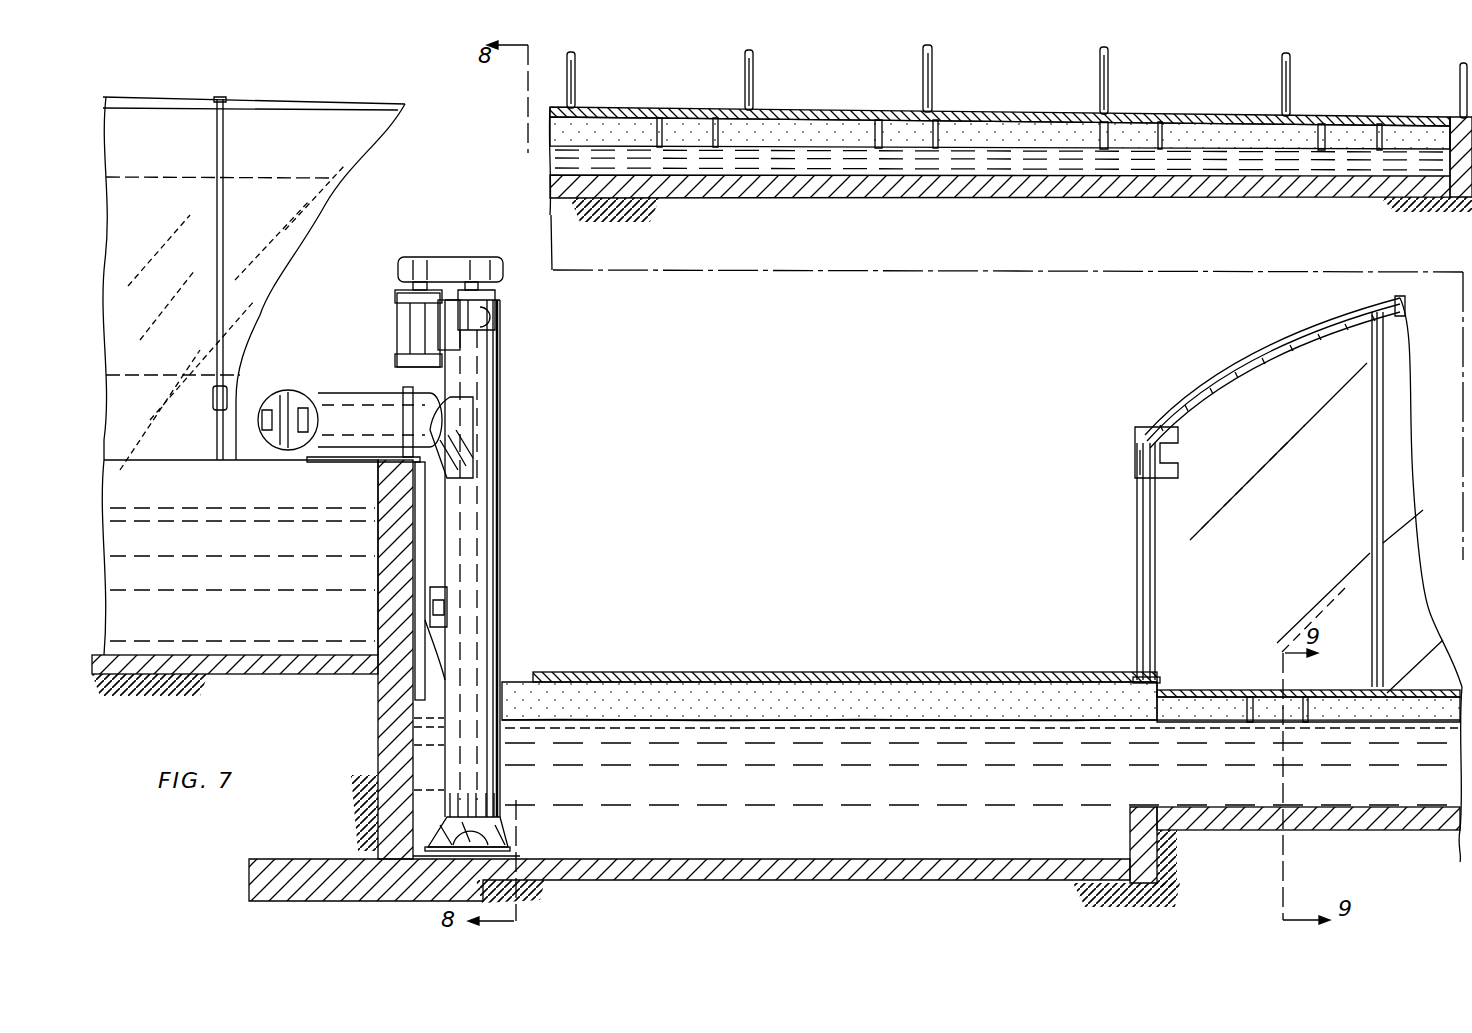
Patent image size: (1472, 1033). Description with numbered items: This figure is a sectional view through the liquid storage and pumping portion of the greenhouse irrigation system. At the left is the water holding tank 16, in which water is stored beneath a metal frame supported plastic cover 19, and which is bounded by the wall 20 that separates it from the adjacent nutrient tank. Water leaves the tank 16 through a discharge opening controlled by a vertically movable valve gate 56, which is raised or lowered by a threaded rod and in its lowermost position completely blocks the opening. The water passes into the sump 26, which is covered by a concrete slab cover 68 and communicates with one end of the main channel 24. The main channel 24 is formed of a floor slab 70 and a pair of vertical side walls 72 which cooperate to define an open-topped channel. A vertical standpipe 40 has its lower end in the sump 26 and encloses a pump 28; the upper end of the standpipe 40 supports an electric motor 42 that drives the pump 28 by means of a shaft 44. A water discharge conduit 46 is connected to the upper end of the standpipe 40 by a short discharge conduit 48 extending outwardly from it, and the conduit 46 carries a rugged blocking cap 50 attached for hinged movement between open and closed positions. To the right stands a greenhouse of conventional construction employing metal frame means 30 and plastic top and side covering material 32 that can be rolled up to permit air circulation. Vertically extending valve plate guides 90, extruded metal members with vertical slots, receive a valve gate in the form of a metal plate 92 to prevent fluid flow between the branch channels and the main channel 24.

The metal frame supported plastic cover 19 is at (360, 152).
The wall 20 is at (219, 500).
The water holding tank 16 is at (204, 647).
The sump 26 is at (808, 858).
The main channel 24 is at (1223, 795).
The floor slab 70 is at (827, 183).
The vertical side walls 72 is at (791, 142).
The concrete slab cover 68 is at (712, 672).
The metal frame means 30 is at (933, 68).
The valve plate guides 90 is at (715, 131).
The metal plate 92 is at (1293, 712).
The plastic top and side covering material 32 is at (1357, 312).
The vertical standpipe 40 is at (502, 535).
The pump 28 is at (508, 783).
The valve gate 56 is at (419, 641).
The shaft 44 is at (495, 322).
The electric motor 42 is at (402, 293).
The water discharge conduit 46 is at (328, 400).
The blocking cap 50 is at (287, 390).
The short discharge conduit 48 is at (417, 390).